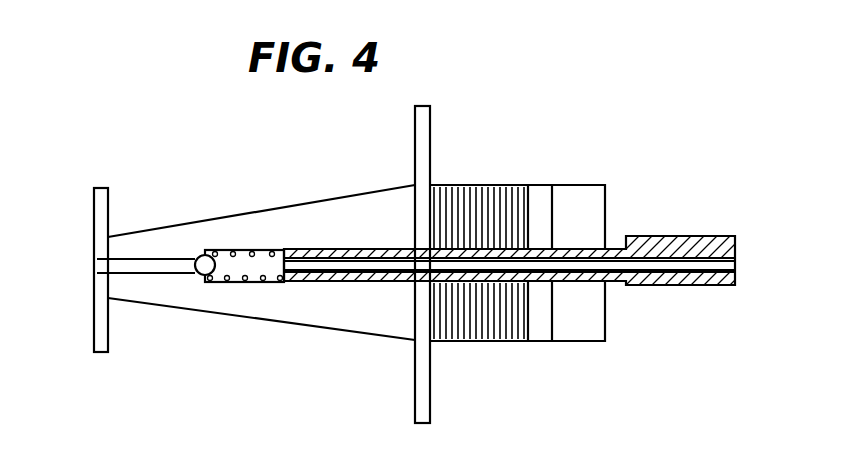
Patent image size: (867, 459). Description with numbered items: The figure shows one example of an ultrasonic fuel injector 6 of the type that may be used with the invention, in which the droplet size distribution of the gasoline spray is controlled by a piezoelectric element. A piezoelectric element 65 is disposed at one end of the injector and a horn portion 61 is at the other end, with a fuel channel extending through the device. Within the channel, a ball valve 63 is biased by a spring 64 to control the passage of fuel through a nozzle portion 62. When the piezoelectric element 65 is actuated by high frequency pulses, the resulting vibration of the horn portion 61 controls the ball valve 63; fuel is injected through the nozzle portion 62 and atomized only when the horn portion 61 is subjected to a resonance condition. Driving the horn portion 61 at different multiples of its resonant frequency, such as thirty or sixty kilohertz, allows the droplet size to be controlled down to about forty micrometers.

The optical connector body 6 is at (487, 178).
The horn portion 61 is at (384, 198).
The nozzle portion 62 is at (100, 268).
The ball valve 63 is at (200, 283).
The spring 64 is at (262, 283).
The piezoelectric element 65 is at (475, 310).